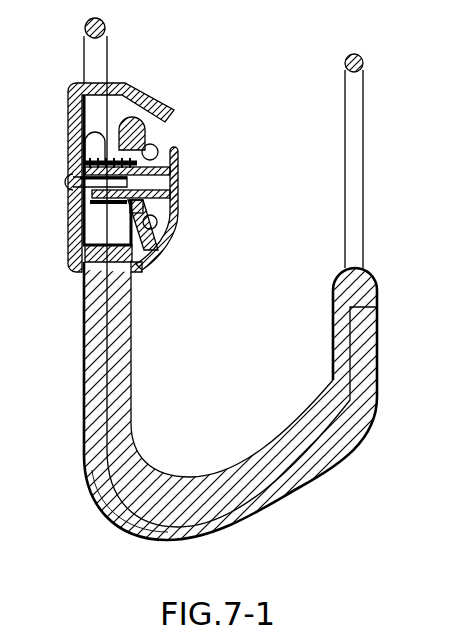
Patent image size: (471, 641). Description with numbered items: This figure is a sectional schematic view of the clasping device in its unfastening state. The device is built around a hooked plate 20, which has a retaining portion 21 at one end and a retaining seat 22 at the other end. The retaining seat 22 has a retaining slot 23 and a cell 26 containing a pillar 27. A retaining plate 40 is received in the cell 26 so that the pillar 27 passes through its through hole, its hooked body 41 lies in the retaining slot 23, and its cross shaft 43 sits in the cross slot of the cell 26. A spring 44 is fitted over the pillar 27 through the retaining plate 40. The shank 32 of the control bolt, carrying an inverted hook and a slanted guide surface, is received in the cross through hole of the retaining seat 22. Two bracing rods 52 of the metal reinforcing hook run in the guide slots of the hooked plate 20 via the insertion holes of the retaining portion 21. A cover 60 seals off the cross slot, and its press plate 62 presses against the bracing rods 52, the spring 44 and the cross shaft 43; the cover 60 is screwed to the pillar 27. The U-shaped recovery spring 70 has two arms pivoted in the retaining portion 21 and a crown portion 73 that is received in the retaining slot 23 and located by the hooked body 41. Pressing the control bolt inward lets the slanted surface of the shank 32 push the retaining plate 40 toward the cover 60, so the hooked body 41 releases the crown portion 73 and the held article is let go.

The hooked plate 20 is at (85, 28).
The retaining portion 21 is at (367, 292).
The retaining seat 22 is at (173, 208).
The retaining slot 23 is at (160, 147).
The cell 26 is at (113, 172).
The pillar 27 is at (155, 172).
The shank 32 is at (157, 218).
The retaining plate 40 is at (160, 248).
The hooked body 41 is at (147, 123).
The cross shaft 43 is at (138, 272).
The spring 44 is at (72, 134).
The bracing rods 52 is at (105, 515).
The cover 60 is at (70, 222).
The press plate 62 is at (110, 258).
The recovery spring 70 is at (358, 175).
The crown portion 73 is at (362, 60).